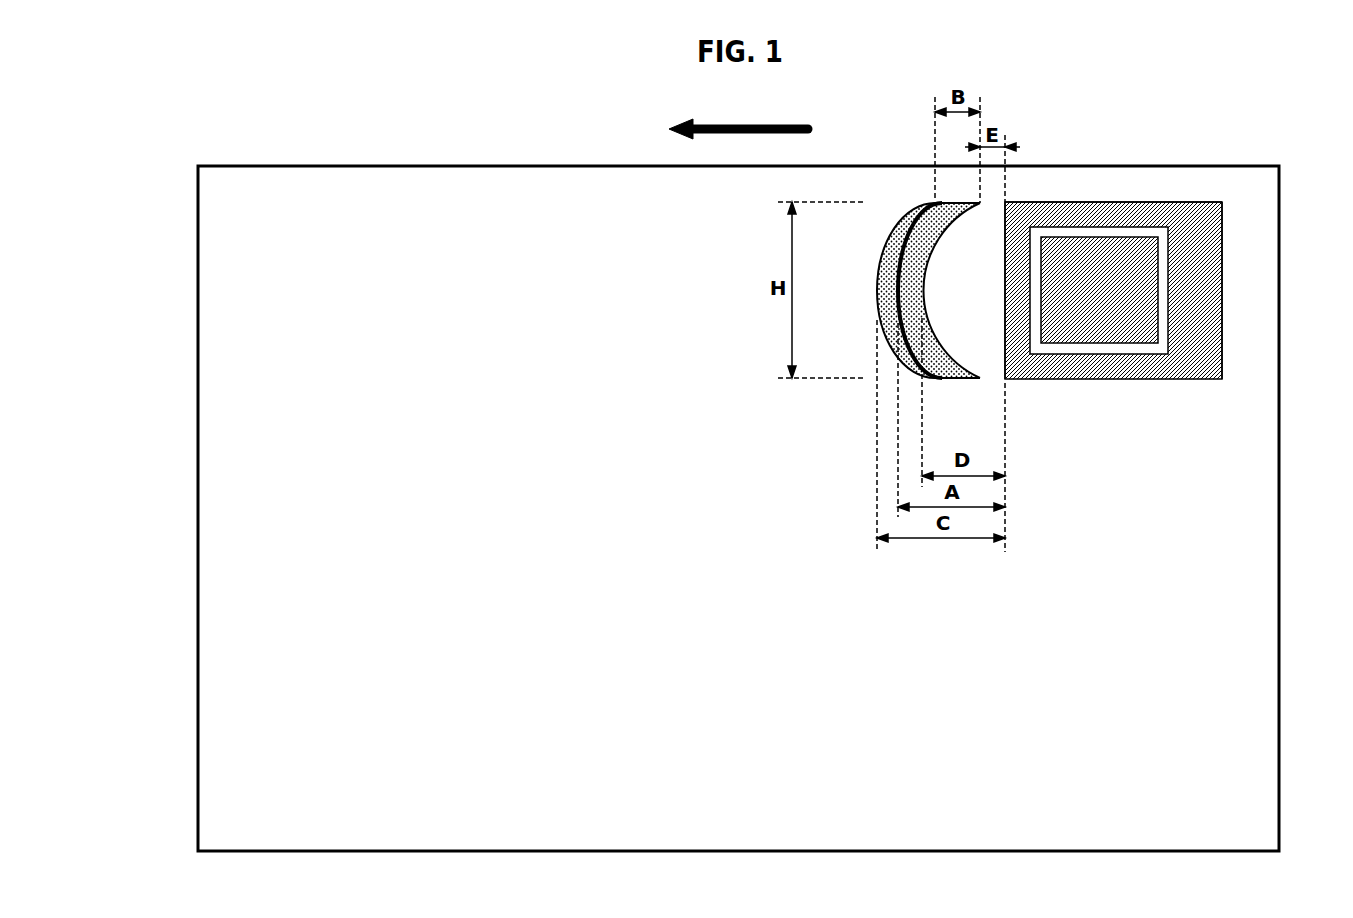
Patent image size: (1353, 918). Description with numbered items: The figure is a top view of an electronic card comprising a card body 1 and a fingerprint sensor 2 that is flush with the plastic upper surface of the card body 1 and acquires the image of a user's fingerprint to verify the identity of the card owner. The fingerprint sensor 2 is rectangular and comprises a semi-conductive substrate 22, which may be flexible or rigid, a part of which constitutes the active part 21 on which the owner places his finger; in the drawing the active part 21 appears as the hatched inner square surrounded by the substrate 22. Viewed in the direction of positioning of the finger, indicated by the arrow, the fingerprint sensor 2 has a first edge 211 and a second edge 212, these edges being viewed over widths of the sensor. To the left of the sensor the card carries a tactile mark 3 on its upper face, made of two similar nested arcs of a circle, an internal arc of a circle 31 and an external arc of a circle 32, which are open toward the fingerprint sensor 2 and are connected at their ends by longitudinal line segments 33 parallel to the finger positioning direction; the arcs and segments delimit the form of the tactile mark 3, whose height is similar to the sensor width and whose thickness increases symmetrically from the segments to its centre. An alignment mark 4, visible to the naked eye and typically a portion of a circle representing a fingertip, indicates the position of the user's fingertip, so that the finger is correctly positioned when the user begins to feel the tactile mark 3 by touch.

The card body 1 is at (192, 498).
The fingerprint sensor 2 is at (1140, 244).
The active part 21 is at (1160, 322).
The semi-conductive substrate 22 is at (1195, 275).
The first edge 211 is at (1220, 240).
The second edge 212 is at (1003, 283).
The tactile mark 3 is at (902, 281).
The internal arc of a circle 31 is at (932, 327).
The external arc of a circle 32 is at (890, 232).
The longitudinal line segments 33 is at (947, 198).
The alignment mark 4 is at (912, 289).